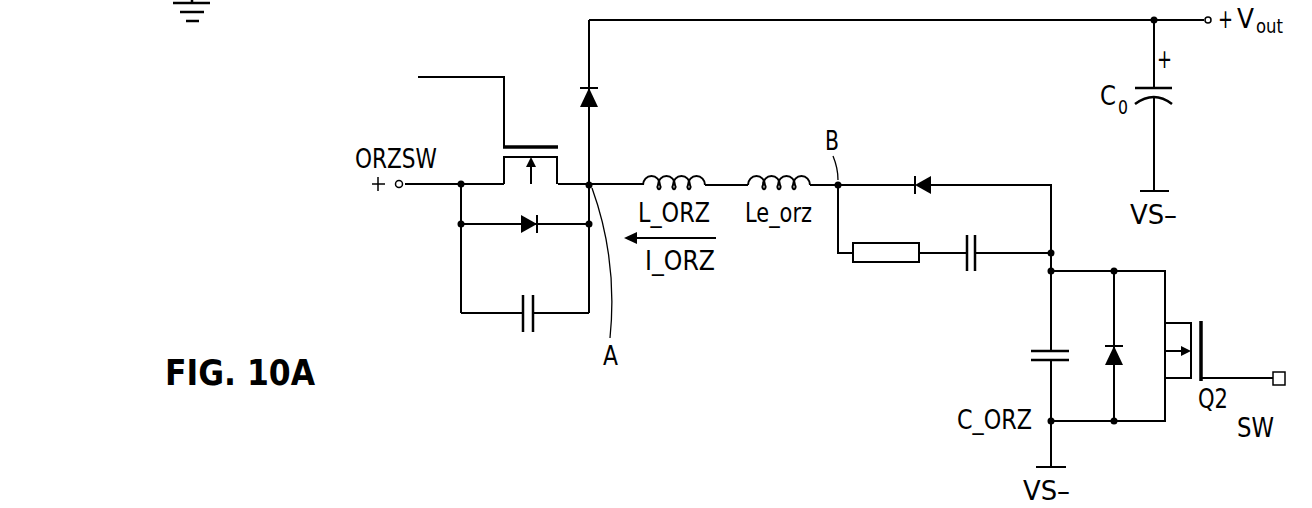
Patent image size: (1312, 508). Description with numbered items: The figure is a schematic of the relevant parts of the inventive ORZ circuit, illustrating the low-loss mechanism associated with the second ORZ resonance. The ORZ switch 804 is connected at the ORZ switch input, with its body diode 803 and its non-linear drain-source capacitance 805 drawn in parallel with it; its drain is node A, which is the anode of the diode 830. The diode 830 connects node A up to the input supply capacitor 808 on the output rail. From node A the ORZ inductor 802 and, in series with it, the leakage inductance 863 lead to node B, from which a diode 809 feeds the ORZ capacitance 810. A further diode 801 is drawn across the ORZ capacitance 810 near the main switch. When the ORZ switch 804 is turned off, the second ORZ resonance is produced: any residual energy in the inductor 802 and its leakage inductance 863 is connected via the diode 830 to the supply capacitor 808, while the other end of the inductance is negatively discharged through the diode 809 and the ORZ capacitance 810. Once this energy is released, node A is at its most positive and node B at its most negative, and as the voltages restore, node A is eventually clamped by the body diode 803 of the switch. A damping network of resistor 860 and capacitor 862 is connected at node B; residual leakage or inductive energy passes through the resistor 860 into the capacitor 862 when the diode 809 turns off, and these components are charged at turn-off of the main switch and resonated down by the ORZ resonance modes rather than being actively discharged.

The diode 801 is at (1122, 345).
The ORZ inductor L_ORZ 802 is at (680, 176).
The body diode of the ORZ switch 803 is at (528, 233).
The ORZ switch 804 is at (542, 143).
The drain-source capacitance of the ORZ switch 805 is at (536, 333).
The input supply capacitor 808 is at (1164, 86).
The diode 809 is at (922, 180).
The ORZ capacitance C_ORZ 810 is at (1032, 351).
The diode 830 is at (596, 86).
The damping resistor 860 is at (977, 235).
The damping capacitor 862 is at (880, 264).
The leakage inductance Le_ORZ 863 is at (787, 176).